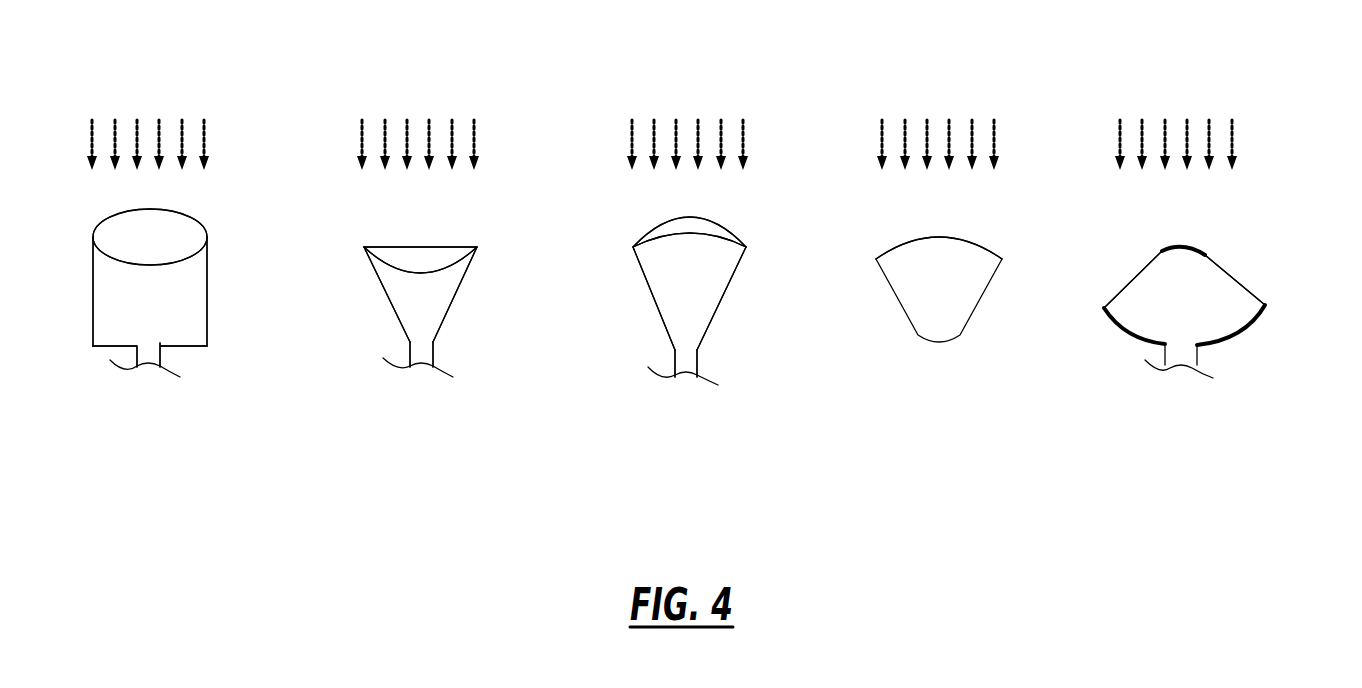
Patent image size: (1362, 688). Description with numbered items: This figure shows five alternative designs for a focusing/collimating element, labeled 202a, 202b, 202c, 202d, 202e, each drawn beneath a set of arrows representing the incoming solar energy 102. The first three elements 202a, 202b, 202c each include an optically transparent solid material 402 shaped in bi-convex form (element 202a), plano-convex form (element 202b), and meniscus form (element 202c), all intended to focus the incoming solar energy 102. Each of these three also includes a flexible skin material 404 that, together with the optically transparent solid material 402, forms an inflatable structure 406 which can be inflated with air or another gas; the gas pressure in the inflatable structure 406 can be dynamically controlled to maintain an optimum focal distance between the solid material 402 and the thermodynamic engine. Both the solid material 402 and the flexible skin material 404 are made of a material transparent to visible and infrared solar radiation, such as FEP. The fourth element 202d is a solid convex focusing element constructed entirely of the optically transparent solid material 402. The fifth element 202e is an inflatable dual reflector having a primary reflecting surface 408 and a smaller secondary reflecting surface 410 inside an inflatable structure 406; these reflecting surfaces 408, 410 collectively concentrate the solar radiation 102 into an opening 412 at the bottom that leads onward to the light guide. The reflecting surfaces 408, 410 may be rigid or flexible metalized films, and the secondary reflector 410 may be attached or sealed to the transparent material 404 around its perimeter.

The solar energy 102 is at (1188, 89).
The focusing/collimating element 202a is at (162, 464).
The focusing/collimating element 202b is at (437, 464).
The focusing/collimating element 202c is at (707, 464).
The focusing/collimating element 202d is at (954, 464).
The focusing/collimating element 202e is at (1230, 248).
The optically transparent solid material 402 is at (155, 240).
The flexible skin material 404 is at (205, 290).
The inflatable structure 406 is at (155, 323).
The primary reflecting surface 408 is at (1265, 308).
The secondary reflecting surface 410 is at (1187, 242).
The opening 412 is at (1177, 345).